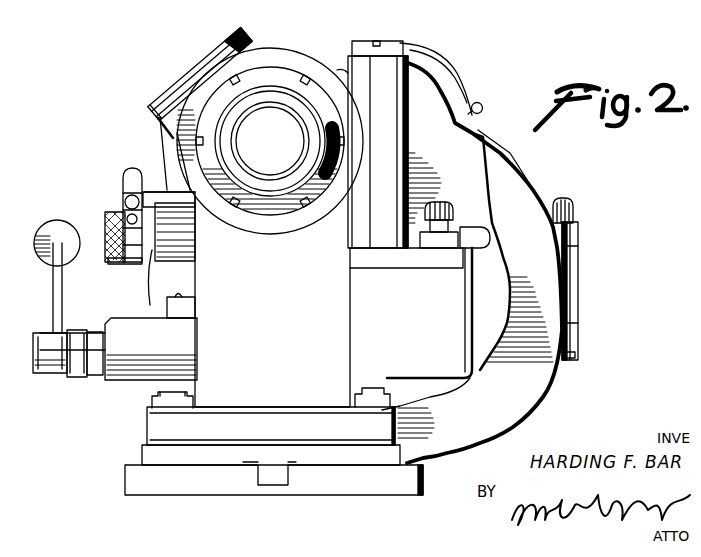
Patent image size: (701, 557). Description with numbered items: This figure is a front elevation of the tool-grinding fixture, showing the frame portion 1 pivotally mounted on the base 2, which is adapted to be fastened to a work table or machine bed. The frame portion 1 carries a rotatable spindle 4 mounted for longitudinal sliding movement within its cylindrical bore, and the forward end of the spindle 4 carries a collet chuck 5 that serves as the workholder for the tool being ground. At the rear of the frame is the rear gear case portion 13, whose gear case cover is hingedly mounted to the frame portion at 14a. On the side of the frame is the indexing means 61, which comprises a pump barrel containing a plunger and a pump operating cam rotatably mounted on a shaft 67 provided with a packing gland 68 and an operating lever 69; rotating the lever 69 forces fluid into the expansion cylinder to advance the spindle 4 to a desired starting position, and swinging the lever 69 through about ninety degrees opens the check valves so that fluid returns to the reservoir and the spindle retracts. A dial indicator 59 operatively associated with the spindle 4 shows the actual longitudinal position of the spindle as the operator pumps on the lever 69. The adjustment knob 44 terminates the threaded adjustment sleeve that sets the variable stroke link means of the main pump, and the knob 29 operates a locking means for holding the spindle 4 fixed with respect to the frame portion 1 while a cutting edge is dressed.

The frame portion 1 is at (270, 227).
The base 2 is at (274, 441).
The spindle 4 is at (241, 168).
The collet chuck 5 is at (313, 155).
The rear gear case portion 13 is at (472, 253).
The hinge mounting of gear case cover 14a is at (580, 264).
The locking knob 29 is at (122, 187).
The adjustment knob 44 is at (105, 223).
The dial indicator 59 is at (184, 68).
The indexing means 61 is at (139, 324).
The shaft 67 is at (118, 264).
The packing gland 68 is at (92, 380).
The operating lever 69 is at (62, 286).